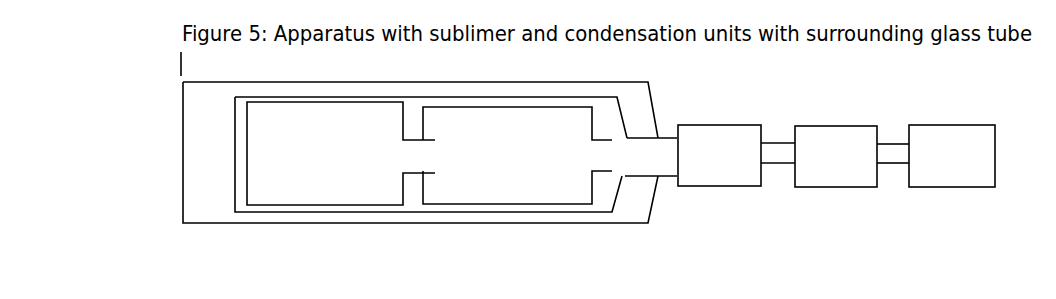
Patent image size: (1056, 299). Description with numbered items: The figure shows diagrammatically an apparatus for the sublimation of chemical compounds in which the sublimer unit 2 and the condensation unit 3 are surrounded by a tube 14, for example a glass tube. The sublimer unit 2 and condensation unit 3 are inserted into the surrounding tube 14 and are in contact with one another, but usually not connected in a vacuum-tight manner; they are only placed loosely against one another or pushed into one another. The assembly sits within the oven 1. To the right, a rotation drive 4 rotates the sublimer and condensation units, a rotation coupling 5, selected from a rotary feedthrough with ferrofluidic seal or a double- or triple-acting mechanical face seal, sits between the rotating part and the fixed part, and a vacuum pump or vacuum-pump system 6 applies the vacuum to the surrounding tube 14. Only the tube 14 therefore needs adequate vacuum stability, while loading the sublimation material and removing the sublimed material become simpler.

The oven 1 is at (218, 200).
The tube 14 is at (410, 212).
The sublimer unit 2 is at (341, 153).
The condensation unit 3 is at (517, 155).
The rotation drive 4 is at (719, 155).
The rotation coupling 5 is at (836, 156).
The vacuum pump or vacuum-pump system 6 is at (952, 156).